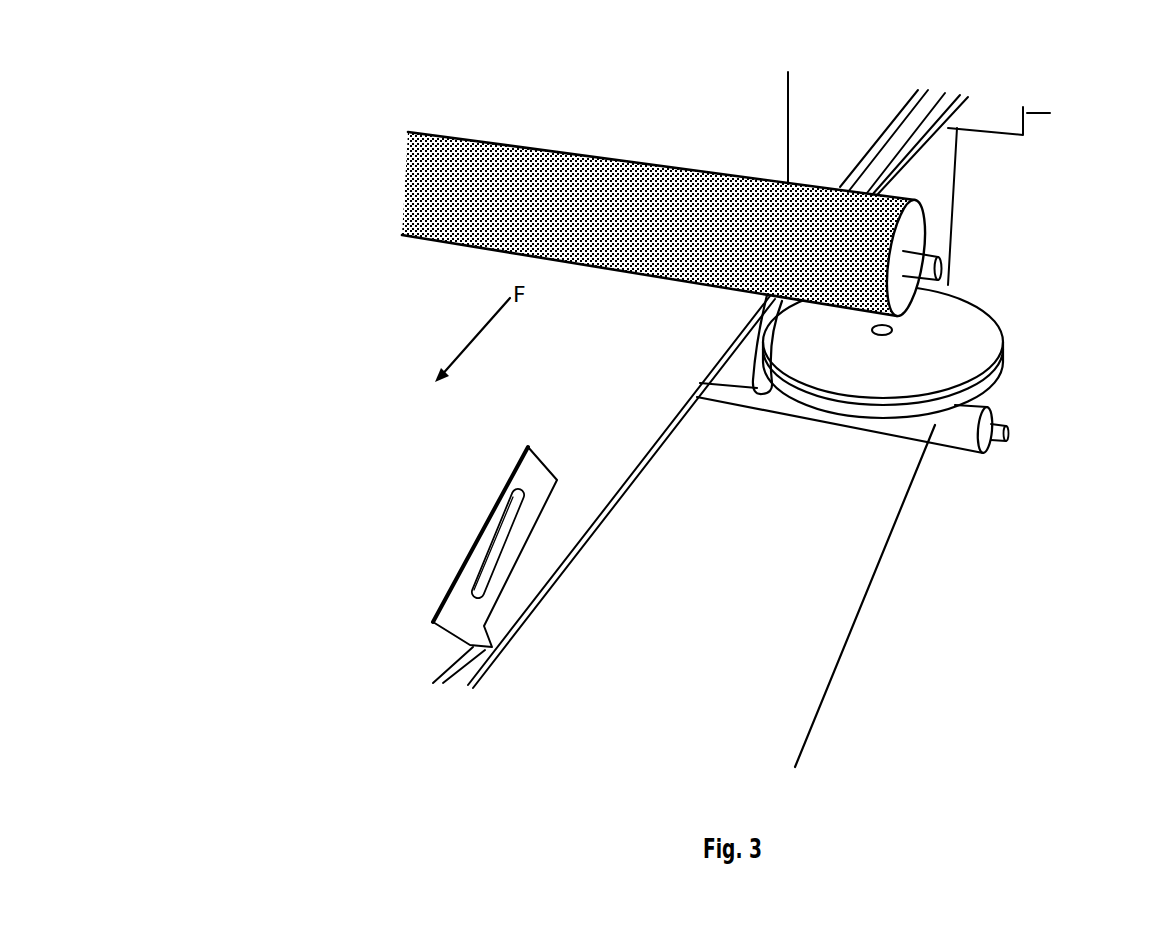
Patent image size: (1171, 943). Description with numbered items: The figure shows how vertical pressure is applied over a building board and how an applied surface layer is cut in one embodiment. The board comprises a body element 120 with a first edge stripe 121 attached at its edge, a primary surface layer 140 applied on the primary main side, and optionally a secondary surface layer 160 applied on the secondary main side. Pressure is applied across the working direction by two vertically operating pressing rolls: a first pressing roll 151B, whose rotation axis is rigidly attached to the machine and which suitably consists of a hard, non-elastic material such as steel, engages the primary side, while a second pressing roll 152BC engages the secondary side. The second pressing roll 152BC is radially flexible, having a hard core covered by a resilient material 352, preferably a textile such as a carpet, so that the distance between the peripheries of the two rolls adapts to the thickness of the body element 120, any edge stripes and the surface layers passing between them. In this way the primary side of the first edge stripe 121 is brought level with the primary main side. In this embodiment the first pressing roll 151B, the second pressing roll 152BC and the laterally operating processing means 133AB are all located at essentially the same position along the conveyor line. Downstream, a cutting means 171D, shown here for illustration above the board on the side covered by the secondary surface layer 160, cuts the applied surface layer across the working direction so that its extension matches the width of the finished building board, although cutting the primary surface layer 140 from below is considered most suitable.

The body element 120 is at (838, 92).
The first edge stripe 121 is at (915, 150).
The laterally operating processing means 133AB is at (997, 365).
The primary surface layer 140 is at (805, 612).
The first pressing roll 151B is at (728, 377).
The second pressing roll 152BC is at (601, 201).
The secondary surface layer 160 is at (663, 122).
The cutting means 171D is at (530, 472).
The resilient material 352 is at (482, 167).